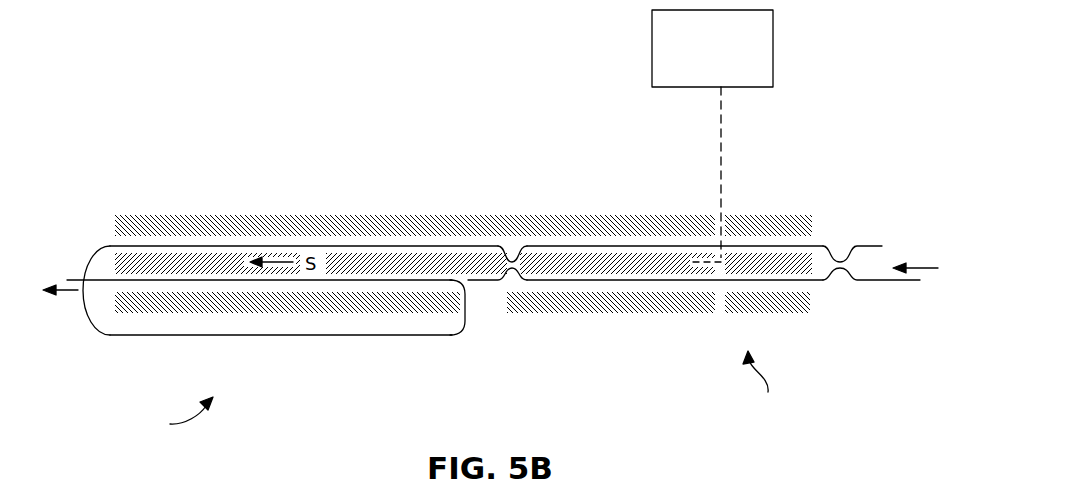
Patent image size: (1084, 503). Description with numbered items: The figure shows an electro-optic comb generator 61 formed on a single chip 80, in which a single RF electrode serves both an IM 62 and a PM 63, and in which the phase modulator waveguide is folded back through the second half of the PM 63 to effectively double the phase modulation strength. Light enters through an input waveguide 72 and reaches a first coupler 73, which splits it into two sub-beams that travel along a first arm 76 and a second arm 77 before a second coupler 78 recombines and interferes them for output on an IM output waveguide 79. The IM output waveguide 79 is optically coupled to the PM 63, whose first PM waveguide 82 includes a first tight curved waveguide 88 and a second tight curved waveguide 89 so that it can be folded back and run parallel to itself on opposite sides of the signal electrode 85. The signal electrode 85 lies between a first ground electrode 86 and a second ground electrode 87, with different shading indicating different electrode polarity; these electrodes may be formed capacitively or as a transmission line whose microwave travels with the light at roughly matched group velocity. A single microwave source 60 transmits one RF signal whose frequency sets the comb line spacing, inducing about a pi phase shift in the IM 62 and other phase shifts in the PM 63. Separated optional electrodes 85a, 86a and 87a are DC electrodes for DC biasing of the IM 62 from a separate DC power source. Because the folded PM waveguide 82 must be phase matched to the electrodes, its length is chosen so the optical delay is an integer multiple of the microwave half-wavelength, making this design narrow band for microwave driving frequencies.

The microwave source 60 is at (693, 45).
The electro-optic comb generator 61 is at (174, 418).
The IM 62 is at (762, 388).
The PM 63 is at (313, 351).
The input waveguide 72 is at (910, 282).
The first coupler 73 is at (840, 277).
The first arm 76 is at (622, 248).
The second arm 77 is at (623, 282).
The second coupler 78 is at (512, 270).
The IM output waveguide 79 is at (433, 246).
The chip 80 is at (270, 443).
The first PM waveguide 82 is at (183, 338).
The signal electrode 85 is at (670, 266).
The separated optional electrode 85a is at (760, 258).
The first ground electrode 86 is at (208, 222).
The separated optional electrode 86a is at (808, 218).
The second ground electrode 87 is at (553, 312).
The separated optional electrode 87a is at (788, 305).
The first tight curved waveguide 88 is at (83, 306).
The second tight curved waveguide 89 is at (463, 332).